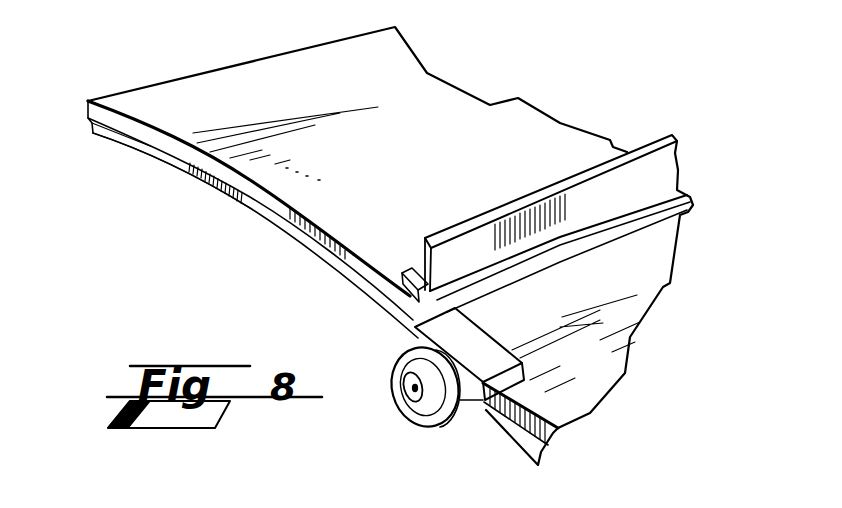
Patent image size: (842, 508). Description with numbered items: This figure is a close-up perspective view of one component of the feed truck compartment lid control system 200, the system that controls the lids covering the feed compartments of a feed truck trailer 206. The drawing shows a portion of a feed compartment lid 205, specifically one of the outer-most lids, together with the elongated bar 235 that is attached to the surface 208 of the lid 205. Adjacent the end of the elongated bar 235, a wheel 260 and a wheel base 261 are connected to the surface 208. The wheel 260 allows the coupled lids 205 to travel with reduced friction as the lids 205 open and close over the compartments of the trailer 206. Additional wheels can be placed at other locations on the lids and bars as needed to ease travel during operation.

The feed truck compartment lid control system 200 is at (100, 82).
The feed compartment lid 205 is at (458, 112).
The feed truck trailer 206 is at (335, 507).
The surface 208 is at (444, 160).
The elongated bar 235 is at (403, 297).
The wheel 260 is at (427, 425).
The wheel base 261 is at (490, 340).